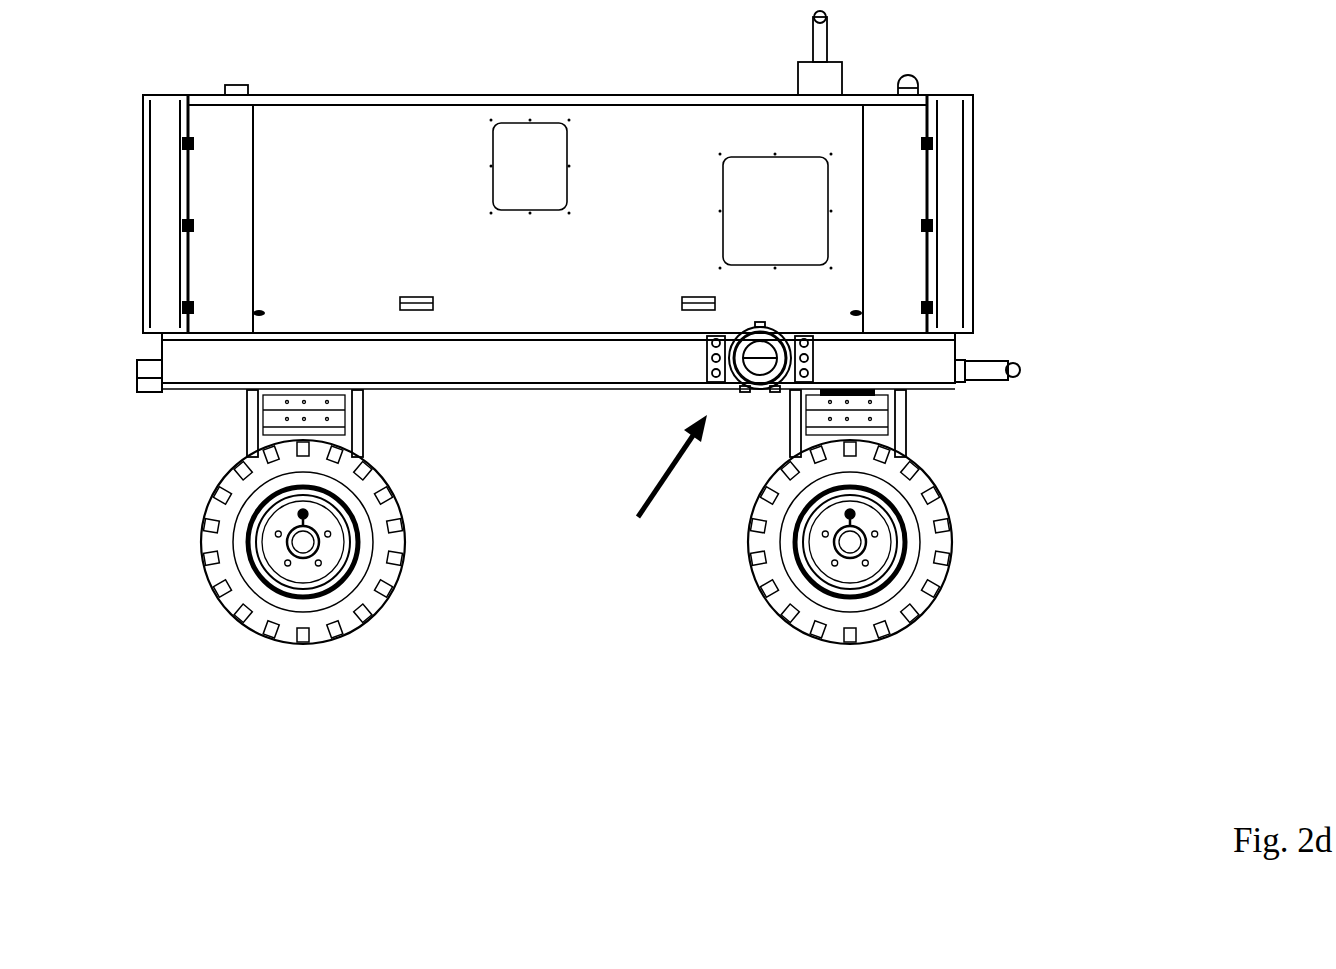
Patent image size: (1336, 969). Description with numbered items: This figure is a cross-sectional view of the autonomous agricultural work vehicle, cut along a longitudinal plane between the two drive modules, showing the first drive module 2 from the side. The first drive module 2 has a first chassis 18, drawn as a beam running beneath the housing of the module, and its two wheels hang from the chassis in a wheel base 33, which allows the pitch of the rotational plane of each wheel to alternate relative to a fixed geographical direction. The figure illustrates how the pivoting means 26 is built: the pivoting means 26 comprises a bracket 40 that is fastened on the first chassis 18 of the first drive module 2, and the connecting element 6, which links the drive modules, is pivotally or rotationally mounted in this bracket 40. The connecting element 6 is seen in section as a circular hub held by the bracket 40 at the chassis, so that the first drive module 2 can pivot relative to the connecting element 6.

The first drive module 2 is at (375, 138).
The first chassis 18 is at (468, 363).
The bracket 40 is at (723, 337).
The connecting element 6 is at (758, 386).
The pivoting means 26 is at (657, 487).
The wheel base 33 is at (857, 402).